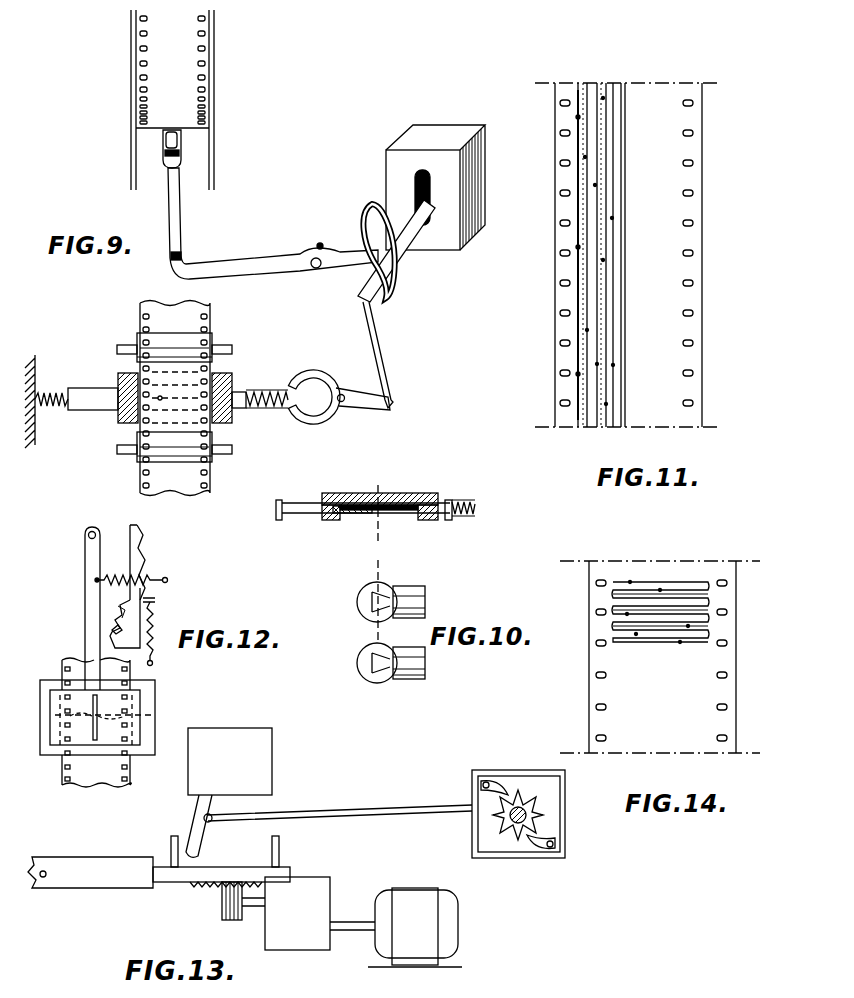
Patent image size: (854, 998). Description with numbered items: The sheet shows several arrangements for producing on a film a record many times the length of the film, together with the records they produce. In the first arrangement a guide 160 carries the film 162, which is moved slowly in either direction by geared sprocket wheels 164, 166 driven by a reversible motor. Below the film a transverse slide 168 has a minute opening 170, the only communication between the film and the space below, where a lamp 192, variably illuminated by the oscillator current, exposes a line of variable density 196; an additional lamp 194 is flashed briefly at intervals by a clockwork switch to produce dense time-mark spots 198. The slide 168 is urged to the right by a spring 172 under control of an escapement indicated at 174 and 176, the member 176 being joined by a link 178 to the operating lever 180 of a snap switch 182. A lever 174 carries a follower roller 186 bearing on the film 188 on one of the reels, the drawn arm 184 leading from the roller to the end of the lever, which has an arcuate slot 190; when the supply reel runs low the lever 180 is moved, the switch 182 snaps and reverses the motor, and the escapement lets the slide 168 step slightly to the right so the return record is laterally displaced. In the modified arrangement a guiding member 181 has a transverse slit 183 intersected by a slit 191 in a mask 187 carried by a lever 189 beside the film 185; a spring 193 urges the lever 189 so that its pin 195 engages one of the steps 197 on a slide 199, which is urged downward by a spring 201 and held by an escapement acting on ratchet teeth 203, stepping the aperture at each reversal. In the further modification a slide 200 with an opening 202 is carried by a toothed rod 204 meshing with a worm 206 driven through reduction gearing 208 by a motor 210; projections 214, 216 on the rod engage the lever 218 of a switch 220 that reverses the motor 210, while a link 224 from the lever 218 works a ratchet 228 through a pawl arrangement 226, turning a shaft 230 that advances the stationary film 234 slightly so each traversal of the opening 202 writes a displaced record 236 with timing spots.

In FIG. 9, the guide 160 is at (226, 376).
In FIG. 10, the guide 160 is at (433, 495).
In FIG. 9, the film 162 is at (160, 474).
In FIG. 10, the film 162 is at (380, 494).
In FIG. 11, the film 162 is at (690, 272).
In FIG. 9, the sprocket wheel 164 is at (190, 346).
In FIG. 9, the sprocket wheel 166 is at (165, 450).
In FIG. 9, the transverse slide 168 is at (88, 392).
In FIG. 10, the transverse slide 168 is at (305, 510).
In FIG. 9, the minute opening 170 is at (126, 410).
In FIG. 10, the minute opening 170 is at (356, 514).
In FIG. 9, the spring 172 is at (52, 392).
In FIG. 9, the lever 174 is at (281, 412).
In FIG. 10, the lever 174 is at (462, 522).
In FIG. 9, the escapement member 176 is at (318, 372).
In FIG. 9, the link 178 is at (382, 352).
In FIG. 9, the operating lever 180 is at (410, 228).
In FIG. 9, the snap switch 182 is at (431, 128).
In FIG. 9, the arm 184 is at (183, 230).
In FIG. 9, the follower roller 186 is at (168, 148).
In FIG. 9, the film 188 is at (178, 93).
In FIG. 9, the arcuate slot 190 is at (366, 220).
In FIG. 10, the lamp 192 is at (360, 588).
In FIG. 10, the lamp 194 is at (360, 652).
In FIG. 11, the line of variable density 196 is at (622, 233).
In FIG. 11, the spots 198 is at (577, 247).
In FIG. 12, the guiding member 181 is at (155, 690).
In FIG. 12, the transverse slit 183 is at (152, 715).
In FIG. 12, the film 185 is at (62, 772).
In FIG. 12, the mask 187 is at (77, 700).
In FIG. 12, the lever 189 is at (85, 567).
In FIG. 12, the slit 191 is at (65, 713).
In FIG. 12, the spring 193 is at (150, 582).
In FIG. 12, the pin 195 is at (112, 630).
In FIG. 12, the steps 197 is at (125, 618).
In FIG. 12, the slide 199 is at (138, 596).
In FIG. 12, the spring 201 is at (153, 612).
In FIG. 12, the ratchet teeth 203 is at (143, 535).
In FIG. 13, the slide 200 is at (90, 858).
In FIG. 13, the opening 202 is at (46, 878).
In FIG. 13, the rod 204 is at (188, 885).
In FIG. 13, the worm 206 is at (220, 922).
In FIG. 13, the reduction gearing 208 is at (318, 892).
In FIG. 13, the motor 210 is at (421, 888).
In FIG. 13, the projection 214 is at (171, 842).
In FIG. 13, the projection 216 is at (279, 847).
In FIG. 13, the switch lever 218 is at (204, 833).
In FIG. 13, the switch 220 is at (272, 766).
In FIG. 13, the link 224 is at (370, 809).
In FIG. 13, the pawl arrangement 226 is at (520, 768).
In FIG. 13, the ratchet 228 is at (512, 835).
In FIG. 13, the shaft 230 is at (526, 820).
In FIG. 14, the film 234 is at (700, 668).
In FIG. 14, the record 236 is at (642, 645).